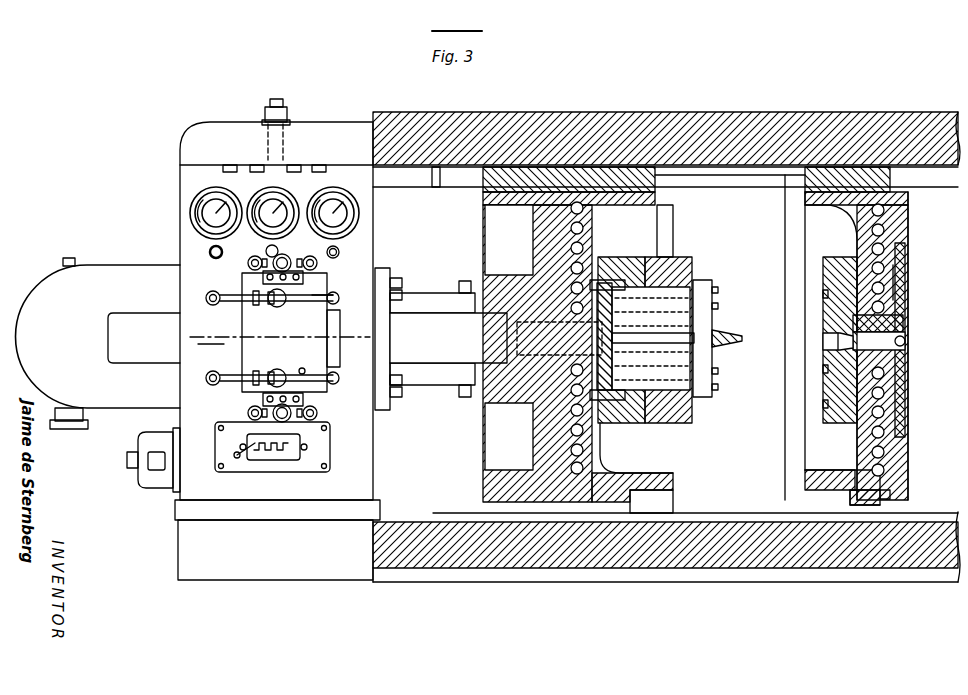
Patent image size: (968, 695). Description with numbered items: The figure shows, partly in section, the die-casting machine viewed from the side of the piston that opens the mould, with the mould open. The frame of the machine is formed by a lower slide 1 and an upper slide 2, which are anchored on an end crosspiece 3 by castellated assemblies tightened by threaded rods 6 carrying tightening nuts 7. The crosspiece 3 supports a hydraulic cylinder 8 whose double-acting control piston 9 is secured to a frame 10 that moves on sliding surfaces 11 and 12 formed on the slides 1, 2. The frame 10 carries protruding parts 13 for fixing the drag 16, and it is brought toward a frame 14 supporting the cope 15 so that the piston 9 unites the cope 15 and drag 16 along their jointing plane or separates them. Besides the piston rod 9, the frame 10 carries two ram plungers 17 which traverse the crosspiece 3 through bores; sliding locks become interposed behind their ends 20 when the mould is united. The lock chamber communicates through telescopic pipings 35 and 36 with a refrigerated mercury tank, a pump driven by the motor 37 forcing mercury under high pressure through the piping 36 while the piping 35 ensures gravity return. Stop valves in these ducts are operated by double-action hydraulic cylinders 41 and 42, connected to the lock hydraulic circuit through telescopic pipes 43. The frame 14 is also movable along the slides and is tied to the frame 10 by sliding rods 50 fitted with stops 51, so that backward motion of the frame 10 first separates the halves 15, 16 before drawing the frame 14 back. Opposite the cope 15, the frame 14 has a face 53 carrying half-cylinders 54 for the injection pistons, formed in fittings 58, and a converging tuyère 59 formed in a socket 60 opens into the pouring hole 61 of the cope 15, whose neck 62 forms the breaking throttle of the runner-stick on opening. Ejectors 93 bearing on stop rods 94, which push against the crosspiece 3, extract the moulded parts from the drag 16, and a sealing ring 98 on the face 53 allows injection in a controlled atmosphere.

The lower slide 1 is at (553, 548).
The upper slide 2 is at (667, 128).
The end crosspiece 3 is at (180, 482).
The threaded rod 6 is at (277, 107).
The tightening nut 7 is at (287, 118).
The hydraulic cylinder 8 is at (45, 372).
The control piston 9 is at (431, 376).
The frame 10 is at (497, 437).
The sliding surface 11 is at (632, 522).
The sliding surface 12 is at (748, 176).
The protruding part 13 is at (596, 432).
The frame 14 is at (818, 455).
The cope 15 is at (832, 406).
The drag 16 is at (648, 410).
The ram plunger 17 is at (430, 325).
The end of ram plunger 20 is at (108, 351).
The telescopic piping 35 is at (228, 382).
The telescopic piping 36 is at (228, 294).
The motor 37 is at (140, 472).
The hydraulic cylinder 41 is at (282, 303).
The hydraulic cylinder 42 is at (284, 373).
The telescopic pipe 43 is at (326, 297).
The sliding rod 50 is at (762, 180).
The stop 51 is at (436, 188).
The face 53 is at (910, 213).
The half-cylinder 54 is at (908, 262).
The fitting 58 is at (897, 283).
The converging tuyère 59 is at (908, 343).
The socket 60 is at (892, 318).
The pouring hole 61 is at (826, 340).
The neck 62 is at (838, 345).
The ejector 93 is at (623, 290).
The stop rod 94 is at (600, 295).
The sealing ring 98 is at (892, 495).